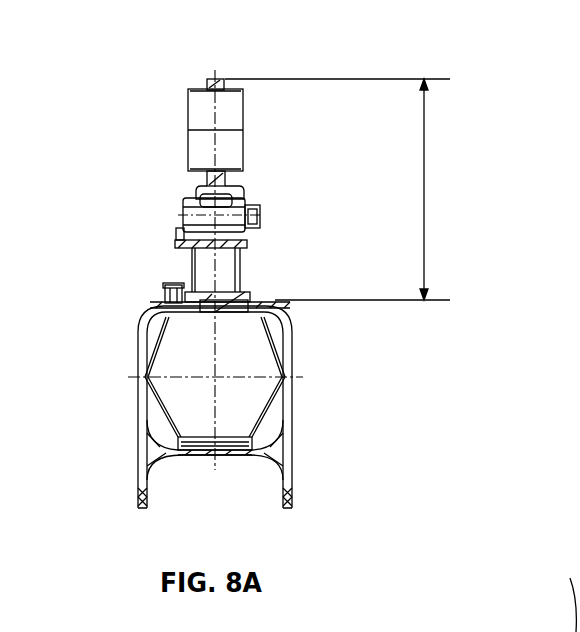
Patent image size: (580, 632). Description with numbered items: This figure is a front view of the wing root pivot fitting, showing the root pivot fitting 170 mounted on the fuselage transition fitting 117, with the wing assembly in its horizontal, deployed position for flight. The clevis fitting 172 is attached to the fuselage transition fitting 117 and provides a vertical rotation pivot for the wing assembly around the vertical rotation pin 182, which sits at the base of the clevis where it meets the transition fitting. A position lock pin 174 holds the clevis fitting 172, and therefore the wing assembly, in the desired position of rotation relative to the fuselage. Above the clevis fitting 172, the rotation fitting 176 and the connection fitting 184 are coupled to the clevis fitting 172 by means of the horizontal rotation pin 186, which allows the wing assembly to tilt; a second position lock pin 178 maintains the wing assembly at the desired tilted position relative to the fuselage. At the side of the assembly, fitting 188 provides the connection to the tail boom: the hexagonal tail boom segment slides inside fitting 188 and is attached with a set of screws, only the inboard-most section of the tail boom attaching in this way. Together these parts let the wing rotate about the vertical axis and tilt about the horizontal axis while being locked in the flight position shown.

The fuselage transition fitting 117 is at (292, 342).
The root pivot fitting 170 is at (118, 92).
The clevis fitting 172 is at (248, 245).
The position lock pin 174 is at (170, 285).
The rotation fitting 176 is at (216, 79).
The position lock pin 178 is at (178, 242).
The vertical rotation pin 182 is at (220, 296).
The connection fitting 184 is at (236, 123).
The horizontal rotation pin 186 is at (246, 196).
The fitting 188 is at (153, 305).